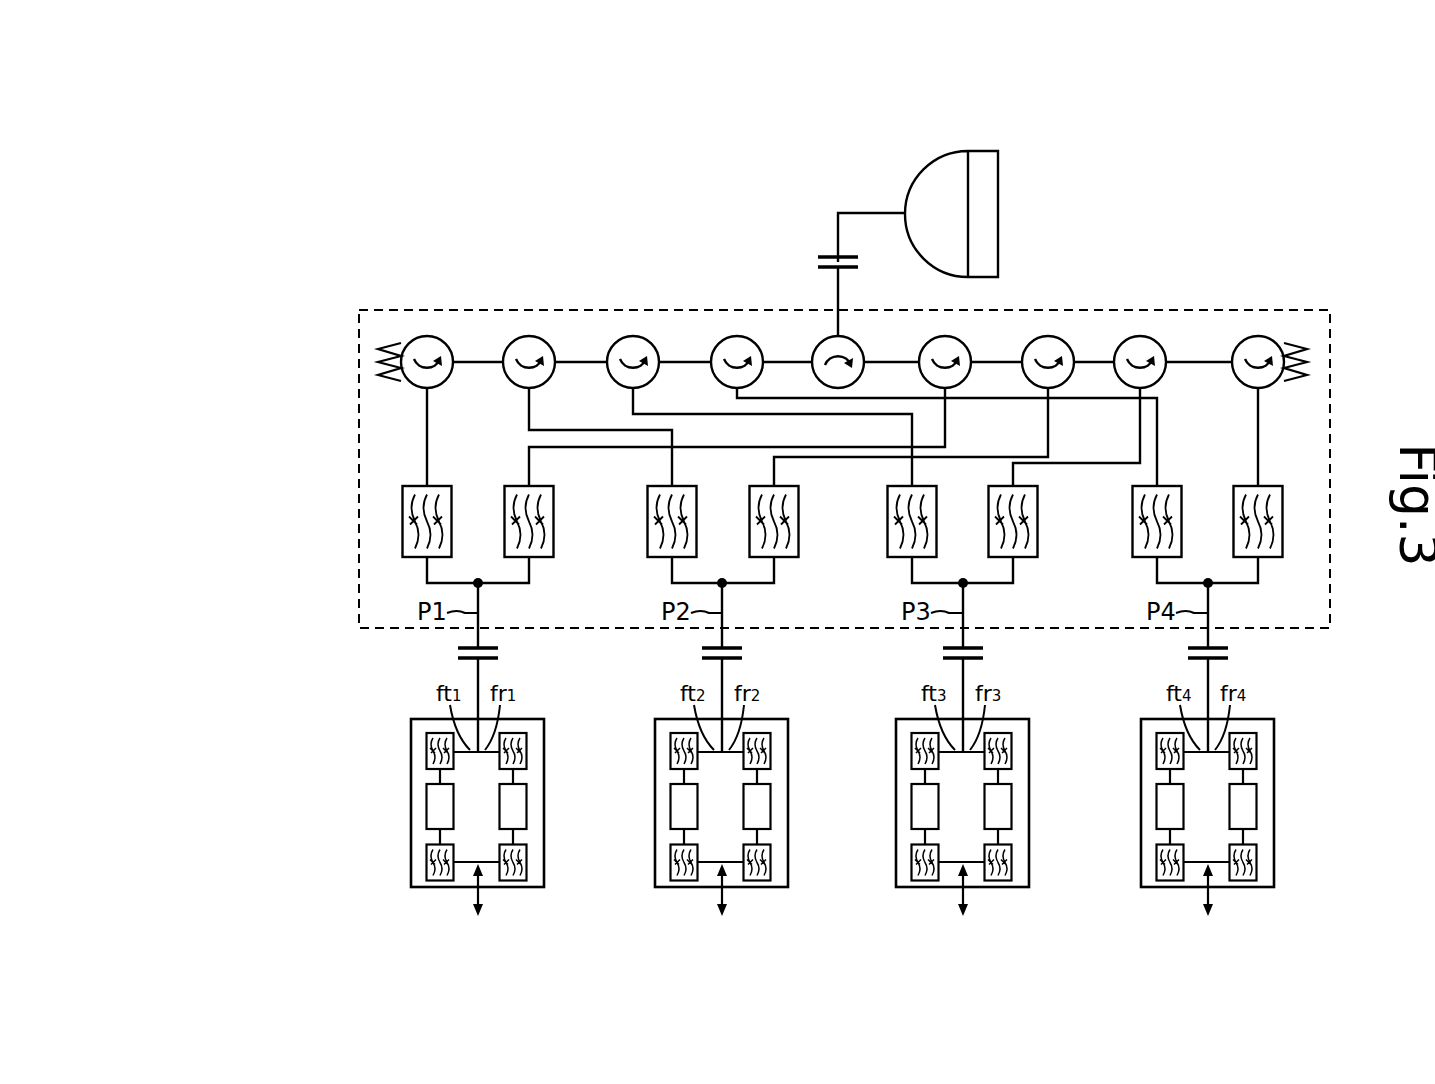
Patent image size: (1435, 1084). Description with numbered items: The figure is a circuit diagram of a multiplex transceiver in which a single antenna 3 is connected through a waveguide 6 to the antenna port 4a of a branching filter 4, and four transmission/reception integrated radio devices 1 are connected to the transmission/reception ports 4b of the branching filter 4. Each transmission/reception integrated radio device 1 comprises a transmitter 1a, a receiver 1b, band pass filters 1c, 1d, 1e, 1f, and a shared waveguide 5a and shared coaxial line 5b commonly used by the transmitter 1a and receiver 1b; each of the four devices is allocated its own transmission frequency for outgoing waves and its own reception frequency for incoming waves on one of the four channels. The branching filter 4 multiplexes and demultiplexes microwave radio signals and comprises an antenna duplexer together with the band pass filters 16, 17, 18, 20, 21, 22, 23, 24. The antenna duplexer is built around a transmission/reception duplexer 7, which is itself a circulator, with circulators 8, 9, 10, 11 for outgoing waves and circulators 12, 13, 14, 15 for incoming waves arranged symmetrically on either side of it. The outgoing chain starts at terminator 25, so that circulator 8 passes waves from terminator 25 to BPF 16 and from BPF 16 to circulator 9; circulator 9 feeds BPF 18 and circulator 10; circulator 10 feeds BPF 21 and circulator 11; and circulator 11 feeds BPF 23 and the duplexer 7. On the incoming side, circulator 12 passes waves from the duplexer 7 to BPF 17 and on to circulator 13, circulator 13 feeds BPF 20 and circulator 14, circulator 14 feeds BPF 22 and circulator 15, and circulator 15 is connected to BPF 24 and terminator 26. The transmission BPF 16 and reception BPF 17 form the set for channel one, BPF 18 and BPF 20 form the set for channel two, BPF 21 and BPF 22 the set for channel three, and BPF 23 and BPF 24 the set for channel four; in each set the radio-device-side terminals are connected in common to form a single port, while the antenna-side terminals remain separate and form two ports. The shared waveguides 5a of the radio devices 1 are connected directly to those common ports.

The transmission/reception integrated radio device 1 is at (1141, 716).
The transmitter 1a is at (1156, 800).
The receiver 1b is at (1295, 811).
The band pass filter 1c is at (1156, 743).
The band pass filter 1d is at (1156, 857).
The band pass filter 1e is at (1295, 757).
The band pass filter 1f is at (1295, 868).
The antenna 3 is at (999, 163).
The branching filter 4 is at (377, 310).
The antenna port 4a is at (820, 257).
The transmission/reception port 4b is at (1245, 655).
The shared waveguide 5a is at (480, 669).
The shared coaxial line 5b is at (1251, 907).
The waveguide 6 is at (867, 212).
The transmission/reception duplexer 7 is at (823, 333).
The circulator 8 is at (427, 336).
The circulator 9 is at (529, 336).
The circulator 10 is at (633, 336).
The circulator 11 is at (737, 336).
The circulator 12 is at (942, 335).
The circulator 13 is at (1047, 336).
The circulator 14 is at (1140, 336).
The circulator 15 is at (1258, 336).
The band pass filter 16 is at (403, 501).
The band pass filter 17 is at (523, 486).
The band pass filter 18 is at (652, 486).
The band pass filter 20 is at (755, 486).
The band pass filter 21 is at (888, 492).
The band pass filter 22 is at (988, 505).
The band pass filter 23 is at (1130, 497).
The band pass filter 24 is at (1238, 486).
The terminator 25 is at (378, 348).
The terminator 26 is at (1291, 335).